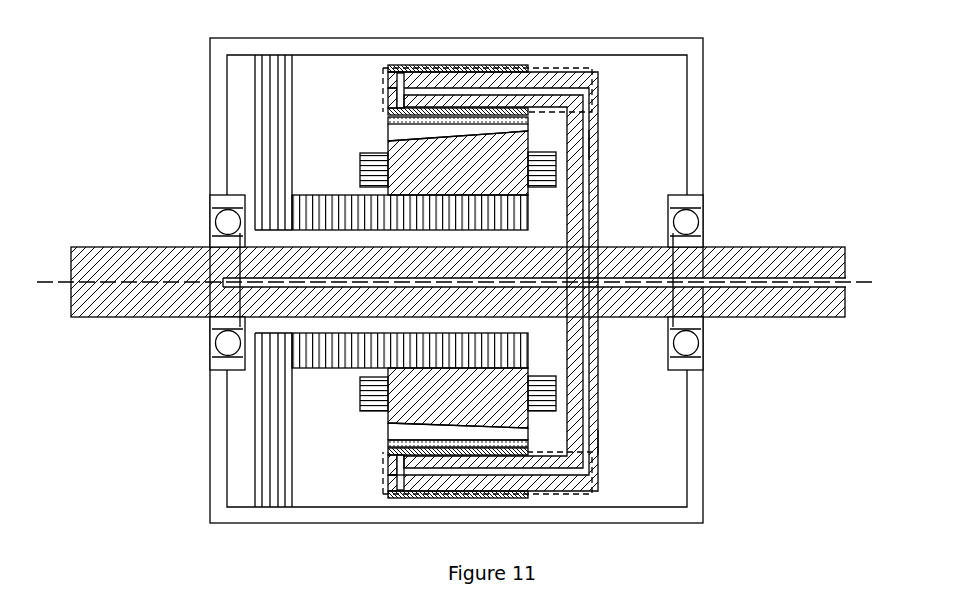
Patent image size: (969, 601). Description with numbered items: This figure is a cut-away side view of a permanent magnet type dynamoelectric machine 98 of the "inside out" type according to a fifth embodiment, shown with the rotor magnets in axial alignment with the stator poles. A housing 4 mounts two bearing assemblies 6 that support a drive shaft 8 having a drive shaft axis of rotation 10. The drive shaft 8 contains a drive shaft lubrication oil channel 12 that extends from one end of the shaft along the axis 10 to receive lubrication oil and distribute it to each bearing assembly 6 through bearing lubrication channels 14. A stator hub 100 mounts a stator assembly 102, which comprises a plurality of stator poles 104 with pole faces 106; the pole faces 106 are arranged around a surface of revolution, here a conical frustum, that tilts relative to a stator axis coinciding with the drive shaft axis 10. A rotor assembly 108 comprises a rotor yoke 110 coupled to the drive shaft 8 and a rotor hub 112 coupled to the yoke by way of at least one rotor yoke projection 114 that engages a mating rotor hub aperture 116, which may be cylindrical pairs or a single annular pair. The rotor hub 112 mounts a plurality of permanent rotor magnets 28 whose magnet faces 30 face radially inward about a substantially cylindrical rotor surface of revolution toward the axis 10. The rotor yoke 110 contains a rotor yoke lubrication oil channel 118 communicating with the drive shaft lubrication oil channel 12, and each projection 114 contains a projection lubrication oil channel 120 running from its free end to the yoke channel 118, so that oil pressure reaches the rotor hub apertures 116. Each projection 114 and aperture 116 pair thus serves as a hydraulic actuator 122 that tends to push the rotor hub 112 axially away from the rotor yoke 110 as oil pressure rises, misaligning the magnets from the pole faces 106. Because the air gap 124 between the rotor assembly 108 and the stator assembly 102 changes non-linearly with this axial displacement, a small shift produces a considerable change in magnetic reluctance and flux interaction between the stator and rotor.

The dynamoelectric machine 98 is at (141, 104).
The housing 4 is at (652, 57).
The bearing assembly 6 is at (210, 203).
The drive shaft 8 is at (773, 246).
The drive shaft axis of rotation 10 is at (53, 282).
The drive shaft lubrication oil channel 12 is at (847, 280).
The bearing lubrication channel 14 is at (247, 240).
The permanent rotor magnet 28 is at (530, 120).
The magnet face 30 is at (487, 126).
The stator hub 100 is at (292, 455).
The stator assembly 102 is at (383, 138).
The stator pole 104 is at (368, 190).
The pole face 106 is at (409, 140).
The rotor assembly 108 is at (605, 443).
The rotor yoke 110 is at (598, 90).
The rotor hub 112 is at (400, 60).
The rotor yoke projection 114 is at (383, 486).
The rotor hub aperture 116 is at (405, 437).
The rotor yoke lubrication oil channel 118 is at (598, 141).
The projection lubrication oil channel 120 is at (546, 82).
The hydraulic actuator 122 is at (465, 68).
The air gap 124 is at (423, 134).